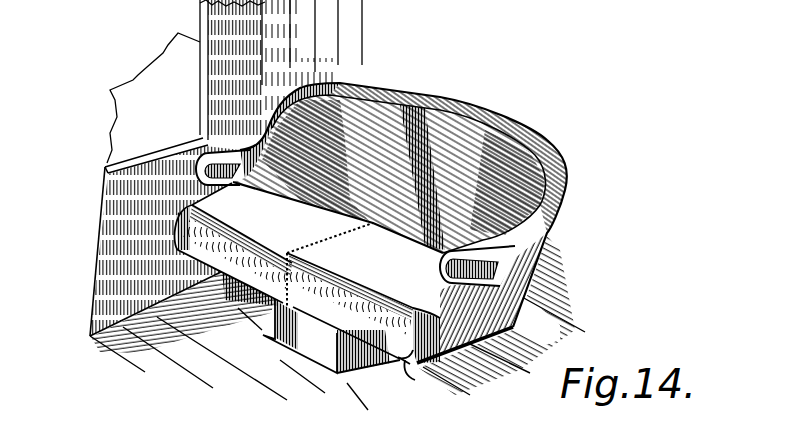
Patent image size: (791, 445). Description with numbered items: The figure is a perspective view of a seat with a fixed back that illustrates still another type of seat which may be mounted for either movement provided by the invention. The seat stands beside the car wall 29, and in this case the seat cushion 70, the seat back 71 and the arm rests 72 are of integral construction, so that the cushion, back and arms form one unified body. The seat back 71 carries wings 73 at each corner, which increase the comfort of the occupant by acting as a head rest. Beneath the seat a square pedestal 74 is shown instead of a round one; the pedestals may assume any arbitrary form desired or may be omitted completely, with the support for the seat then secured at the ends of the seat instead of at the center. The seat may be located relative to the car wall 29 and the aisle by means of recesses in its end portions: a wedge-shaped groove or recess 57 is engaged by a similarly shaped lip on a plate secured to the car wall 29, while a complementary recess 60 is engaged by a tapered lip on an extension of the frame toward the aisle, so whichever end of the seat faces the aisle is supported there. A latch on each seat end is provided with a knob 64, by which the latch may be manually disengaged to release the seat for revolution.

The car wall 29 is at (148, 190).
The groove or recess 57 is at (415, 380).
The complementary recess 60 is at (405, 365).
The knob 64 is at (483, 341).
The seat cushion 70 is at (307, 273).
The seat back 71 is at (493, 140).
The arm rests 72 is at (217, 163).
The wings 73 is at (337, 83).
The square pedestal 74 is at (307, 338).